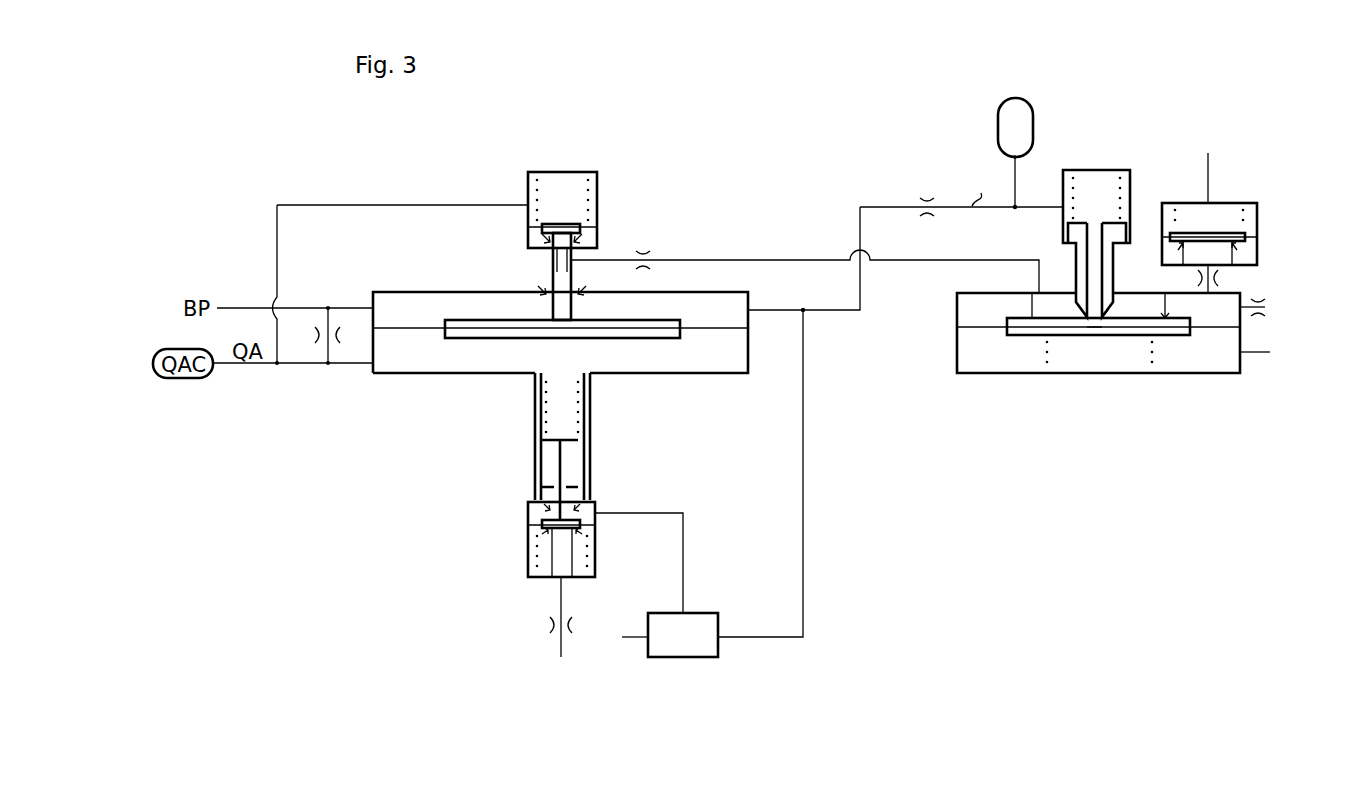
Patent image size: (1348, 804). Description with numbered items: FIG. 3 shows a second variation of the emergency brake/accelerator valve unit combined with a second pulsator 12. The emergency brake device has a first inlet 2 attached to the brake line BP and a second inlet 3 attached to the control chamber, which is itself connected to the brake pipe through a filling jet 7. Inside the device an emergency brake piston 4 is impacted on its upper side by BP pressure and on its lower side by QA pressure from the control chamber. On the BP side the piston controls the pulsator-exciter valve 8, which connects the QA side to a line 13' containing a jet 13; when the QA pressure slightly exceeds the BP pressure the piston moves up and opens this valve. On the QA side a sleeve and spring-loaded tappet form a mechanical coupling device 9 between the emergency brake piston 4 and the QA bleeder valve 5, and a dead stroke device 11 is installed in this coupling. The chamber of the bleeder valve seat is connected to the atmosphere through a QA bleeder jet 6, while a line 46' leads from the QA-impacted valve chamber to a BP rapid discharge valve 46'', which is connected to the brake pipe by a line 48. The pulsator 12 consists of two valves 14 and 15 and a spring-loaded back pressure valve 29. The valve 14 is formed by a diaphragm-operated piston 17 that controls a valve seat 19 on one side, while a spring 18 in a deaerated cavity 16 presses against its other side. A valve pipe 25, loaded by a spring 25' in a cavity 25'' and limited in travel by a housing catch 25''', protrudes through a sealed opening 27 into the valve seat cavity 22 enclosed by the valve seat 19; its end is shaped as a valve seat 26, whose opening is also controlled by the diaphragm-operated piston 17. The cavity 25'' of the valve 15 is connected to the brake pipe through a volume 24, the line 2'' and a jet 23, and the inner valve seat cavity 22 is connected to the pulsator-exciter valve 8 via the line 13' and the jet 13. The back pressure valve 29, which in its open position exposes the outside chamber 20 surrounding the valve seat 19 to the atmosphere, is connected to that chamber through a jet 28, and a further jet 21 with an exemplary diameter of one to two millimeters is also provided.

The first inlet 2 is at (546, 322).
The line 2'' is at (804, 258).
The second inlet 3 is at (373, 371).
The emergency brake piston 4 is at (474, 320).
The QA bleeder valve 5 is at (526, 546).
The QA bleeder jet 6 is at (546, 625).
The filling jet 7 is at (314, 345).
The pulsator-exciter valve 8 is at (564, 169).
The mechanical coupling device 9 is at (592, 454).
The dead stroke device 11 is at (556, 472).
The pulsator 12 is at (946, 339).
The jet 13 is at (653, 238).
The line 13' is at (805, 250).
The valve 14 is at (1015, 340).
The valve 15 is at (1098, 339).
The deaerated cavity 16 is at (1203, 350).
The diaphragm-operated piston 17 is at (1062, 338).
The spring 18 is at (1152, 352).
The valve seat 19 is at (1024, 314).
The outside chamber 20 is at (975, 311).
The jet 21 is at (1268, 318).
The valve seat cavity 22 is at (1046, 303).
The jet 23 is at (927, 220).
The volume 24 is at (1027, 97).
The valve pipe 25 is at (1077, 270).
The spring 25' is at (1084, 173).
The cavity 25'' is at (1097, 172).
The housing catch 25''' is at (1061, 230).
The valve seat 26 is at (1108, 314).
The sealed opening 27 is at (1117, 296).
The jet 28 is at (1221, 278).
The back pressure valve 29 is at (1264, 217).
The line 46' is at (668, 563).
The BP rapid discharge valve 46'' is at (656, 659).
The line 48 is at (770, 637).